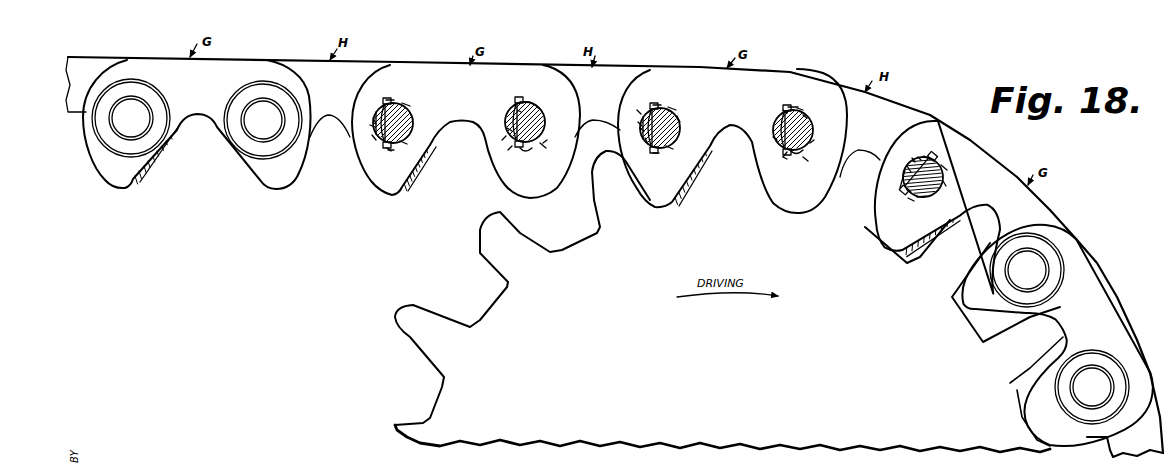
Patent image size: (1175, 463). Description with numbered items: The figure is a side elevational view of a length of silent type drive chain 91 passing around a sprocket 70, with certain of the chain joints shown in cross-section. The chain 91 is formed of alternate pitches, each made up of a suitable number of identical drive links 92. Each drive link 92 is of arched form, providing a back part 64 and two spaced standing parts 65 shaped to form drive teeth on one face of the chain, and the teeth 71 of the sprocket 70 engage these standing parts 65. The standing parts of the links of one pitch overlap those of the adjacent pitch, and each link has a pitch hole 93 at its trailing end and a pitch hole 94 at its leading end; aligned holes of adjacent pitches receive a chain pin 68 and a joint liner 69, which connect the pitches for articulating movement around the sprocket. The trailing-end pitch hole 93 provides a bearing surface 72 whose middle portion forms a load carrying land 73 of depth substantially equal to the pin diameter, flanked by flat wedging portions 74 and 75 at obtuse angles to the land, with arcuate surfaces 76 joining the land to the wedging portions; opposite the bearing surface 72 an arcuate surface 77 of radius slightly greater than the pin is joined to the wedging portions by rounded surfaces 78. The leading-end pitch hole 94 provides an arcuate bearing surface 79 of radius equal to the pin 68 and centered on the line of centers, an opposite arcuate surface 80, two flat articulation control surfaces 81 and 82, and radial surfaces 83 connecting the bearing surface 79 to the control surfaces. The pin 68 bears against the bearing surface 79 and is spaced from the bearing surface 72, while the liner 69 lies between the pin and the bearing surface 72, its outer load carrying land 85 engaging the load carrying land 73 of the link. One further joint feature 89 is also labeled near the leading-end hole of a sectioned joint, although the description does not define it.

The back part 64 is at (165, 68).
The standing part 65 is at (140, 177).
The chain pin 68 is at (415, 125).
The joint liner 69 is at (387, 148).
The sprocket 70 is at (470, 383).
The sprocket teeth 71 is at (600, 200).
The bearing surface 72 is at (372, 135).
The load carrying land 73 is at (375, 112).
The wedging portion 74 is at (395, 102).
The wedging portion 75 is at (388, 150).
The arcuate surface 76 is at (378, 107).
The arcuate surface 77 is at (410, 115).
The rounded surface 78 is at (402, 102).
The bearing surface 79 is at (543, 143).
The arcuate surface 80 is at (508, 150).
The articulation control surface 81 is at (525, 102).
The articulation control surface 82 is at (525, 153).
The radial surface 83 is at (537, 107).
The load carrying land 85 is at (373, 118).
The pin notch 89 is at (797, 108).
The silent type drive chain 91 is at (612, 68).
The drive link 92 is at (232, 72).
The pitch hole 93 is at (370, 125).
The pitch hole 94 is at (502, 140).